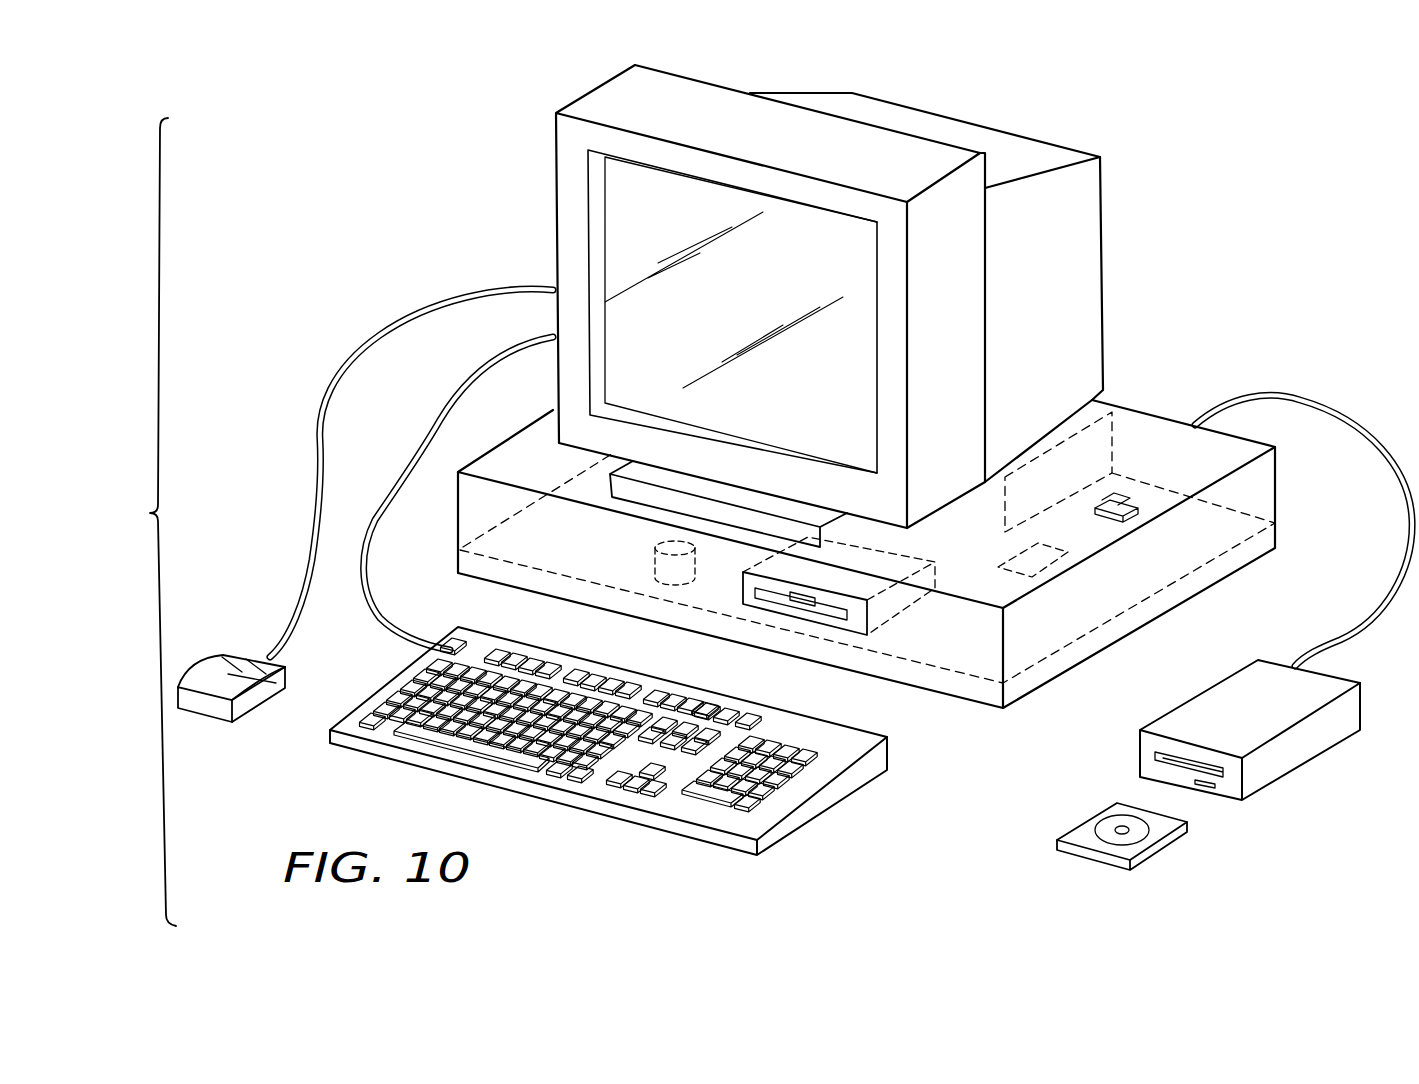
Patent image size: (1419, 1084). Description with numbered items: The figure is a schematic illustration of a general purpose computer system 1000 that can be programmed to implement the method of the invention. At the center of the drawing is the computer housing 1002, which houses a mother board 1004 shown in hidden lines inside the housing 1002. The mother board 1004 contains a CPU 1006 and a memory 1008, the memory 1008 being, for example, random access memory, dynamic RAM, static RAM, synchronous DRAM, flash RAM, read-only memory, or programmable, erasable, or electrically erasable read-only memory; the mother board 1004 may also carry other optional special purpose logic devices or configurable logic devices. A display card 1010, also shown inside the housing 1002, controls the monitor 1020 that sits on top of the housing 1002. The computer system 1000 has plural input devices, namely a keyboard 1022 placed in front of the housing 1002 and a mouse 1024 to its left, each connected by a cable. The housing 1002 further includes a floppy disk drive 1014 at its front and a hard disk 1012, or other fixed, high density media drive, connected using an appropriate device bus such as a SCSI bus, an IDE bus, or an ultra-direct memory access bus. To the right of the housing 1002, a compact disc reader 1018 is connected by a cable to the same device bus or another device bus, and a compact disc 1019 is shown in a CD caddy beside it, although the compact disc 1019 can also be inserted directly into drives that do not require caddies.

The computer system 1000 is at (134, 522).
The computer housing 1002 is at (866, 521).
The mother board 1004 is at (1160, 503).
The CPU 1006 is at (1045, 567).
The memory 1008 is at (1123, 494).
The display card 1010 is at (1088, 432).
The hard disk 1012 is at (653, 552).
The floppy disk drive 1014 is at (866, 625).
The compact disc reader 1018 is at (1300, 758).
The compact disc 1019 is at (1142, 833).
The monitor 1020 is at (963, 128).
The keyboard 1022 is at (840, 793).
The mouse 1024 is at (212, 665).